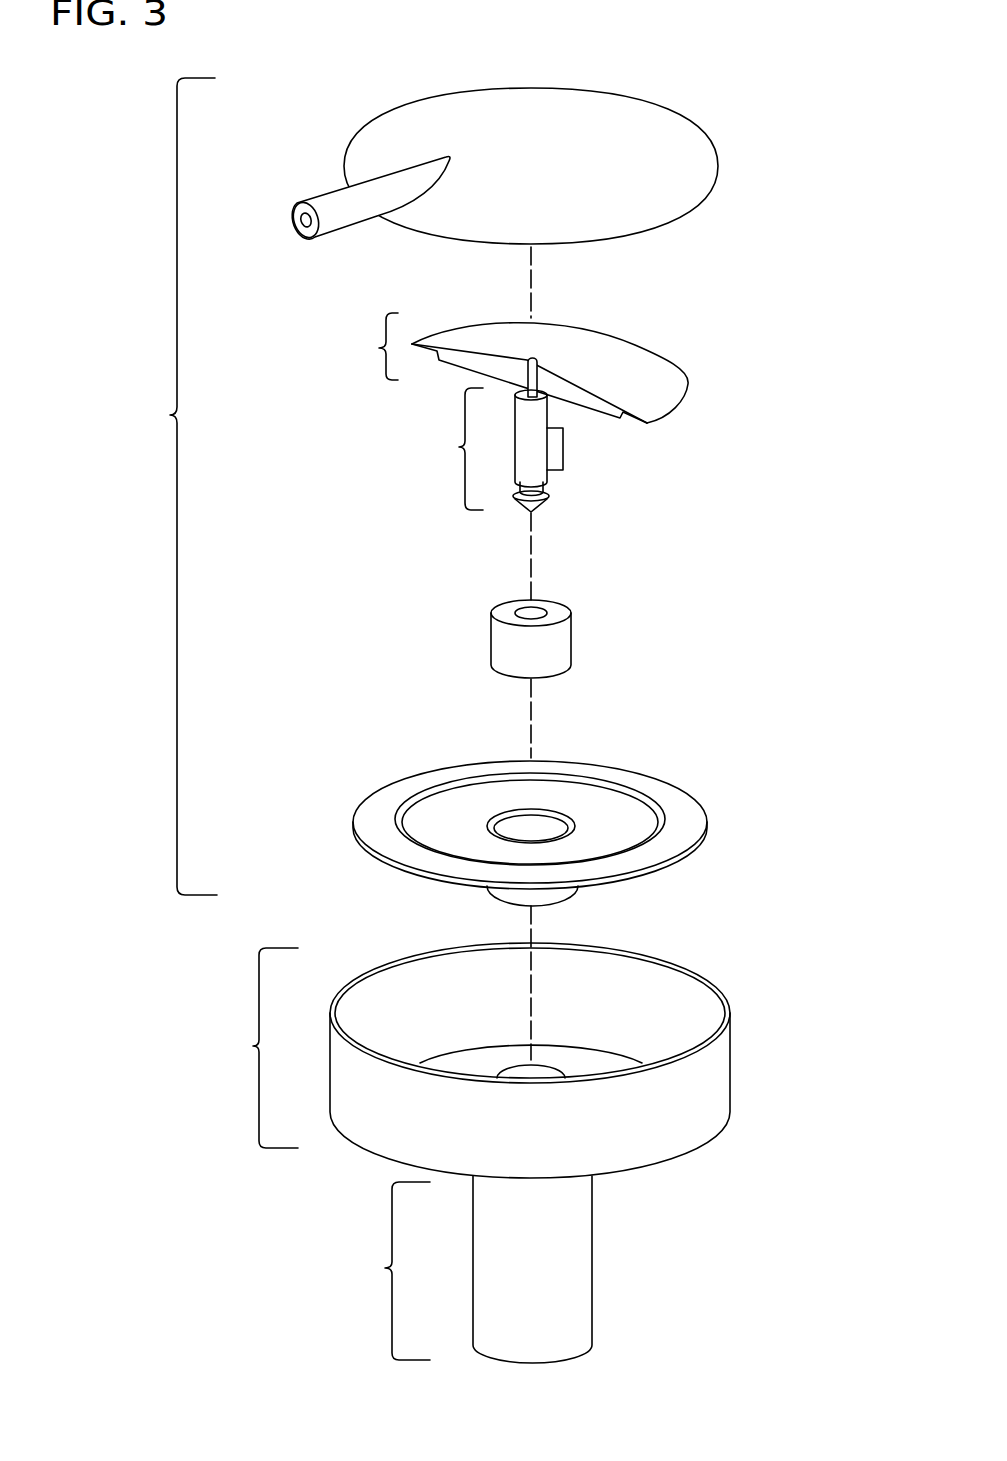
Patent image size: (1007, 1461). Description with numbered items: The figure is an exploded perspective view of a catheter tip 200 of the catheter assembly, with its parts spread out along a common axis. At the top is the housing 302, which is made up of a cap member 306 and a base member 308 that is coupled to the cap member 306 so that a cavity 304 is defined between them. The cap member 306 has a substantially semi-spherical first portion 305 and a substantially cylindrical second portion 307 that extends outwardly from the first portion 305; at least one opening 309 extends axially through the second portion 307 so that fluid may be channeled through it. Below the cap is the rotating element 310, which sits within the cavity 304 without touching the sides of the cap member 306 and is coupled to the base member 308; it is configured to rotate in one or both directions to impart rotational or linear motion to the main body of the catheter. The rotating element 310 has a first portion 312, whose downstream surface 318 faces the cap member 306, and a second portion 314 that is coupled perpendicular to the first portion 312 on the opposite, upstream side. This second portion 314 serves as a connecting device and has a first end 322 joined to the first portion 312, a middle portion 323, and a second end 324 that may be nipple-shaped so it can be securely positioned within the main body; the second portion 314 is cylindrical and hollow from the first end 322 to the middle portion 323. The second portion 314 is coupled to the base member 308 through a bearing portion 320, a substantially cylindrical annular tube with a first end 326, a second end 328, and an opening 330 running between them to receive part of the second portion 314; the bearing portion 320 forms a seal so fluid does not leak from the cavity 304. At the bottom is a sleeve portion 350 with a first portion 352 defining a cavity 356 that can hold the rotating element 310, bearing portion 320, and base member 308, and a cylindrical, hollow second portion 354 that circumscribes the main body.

The catheter tip 200 is at (318, 78).
The housing 302 is at (170, 415).
The cavity 304 is at (590, 805).
The first portion 305 is at (602, 88).
The cap member 306 is at (546, 170).
The second portion 307 is at (349, 213).
The base member 308 is at (582, 816).
The opening 309 is at (298, 227).
The rotating element 310 is at (568, 403).
The first portion 312 is at (379, 348).
The second portion 314 is at (575, 451).
The downstream surface 318 is at (603, 322).
The bearing portion 320 is at (529, 630).
The first end 322 is at (557, 410).
The middle portion 323 is at (563, 450).
The second end 324 is at (553, 505).
The first end 326 is at (485, 610).
The second end 328 is at (487, 676).
The opening 330 is at (540, 608).
The sleeve portion 350 is at (521, 1144).
The first portion 352 is at (463, 1051).
The second portion 354 is at (385, 1268).
The cavity 356 is at (628, 987).